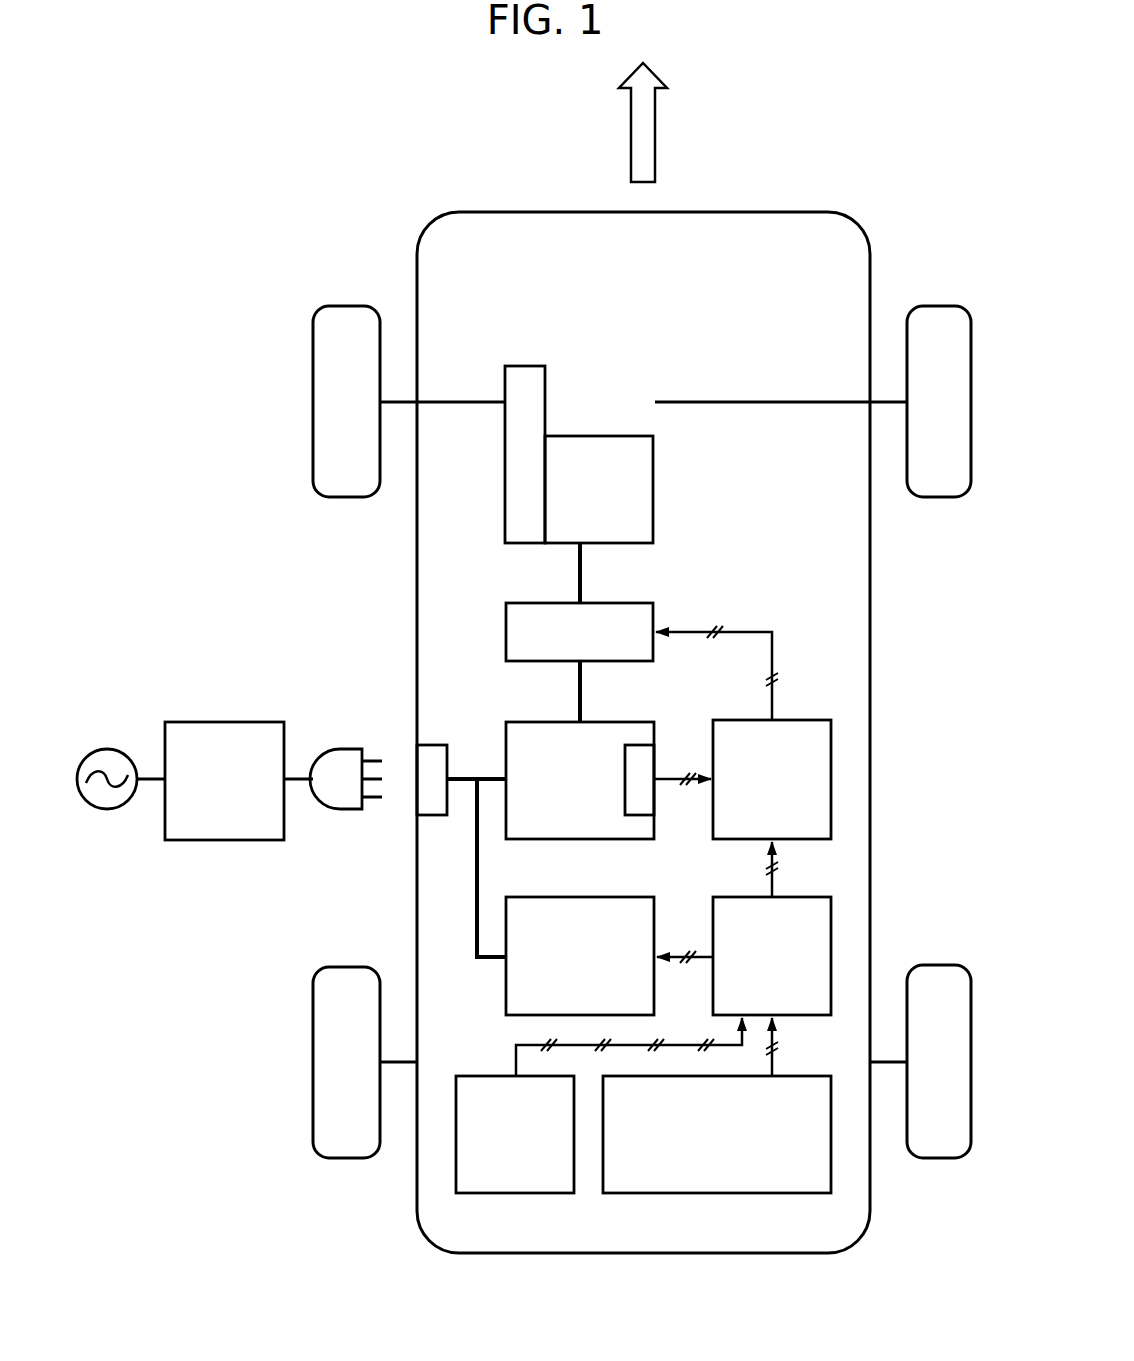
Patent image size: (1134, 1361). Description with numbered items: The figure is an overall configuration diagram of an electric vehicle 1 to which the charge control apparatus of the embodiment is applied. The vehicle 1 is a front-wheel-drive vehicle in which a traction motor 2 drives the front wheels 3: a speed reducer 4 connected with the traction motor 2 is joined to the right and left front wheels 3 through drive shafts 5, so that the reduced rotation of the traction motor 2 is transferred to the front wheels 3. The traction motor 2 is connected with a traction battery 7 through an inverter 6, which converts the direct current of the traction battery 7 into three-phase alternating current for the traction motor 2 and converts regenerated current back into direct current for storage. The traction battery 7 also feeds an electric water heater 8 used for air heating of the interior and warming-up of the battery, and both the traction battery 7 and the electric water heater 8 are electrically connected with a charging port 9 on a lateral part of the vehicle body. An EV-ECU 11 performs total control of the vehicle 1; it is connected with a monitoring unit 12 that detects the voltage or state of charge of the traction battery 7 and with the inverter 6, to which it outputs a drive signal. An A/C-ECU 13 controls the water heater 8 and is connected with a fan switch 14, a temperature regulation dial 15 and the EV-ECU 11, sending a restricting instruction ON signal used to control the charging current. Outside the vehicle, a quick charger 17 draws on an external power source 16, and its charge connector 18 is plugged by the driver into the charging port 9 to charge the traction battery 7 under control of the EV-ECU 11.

The vehicle 1 is at (238, 296).
The traction motor 2 is at (655, 448).
The front wheels 3 is at (347, 305).
The speed reducer 4 is at (520, 365).
The drive shafts 5 is at (464, 400).
The inverter 6 is at (505, 617).
The traction battery 7 is at (526, 720).
The electric water heater 8 is at (526, 896).
The charging port 9 is at (442, 744).
The EV-ECU 11 is at (816, 718).
The monitoring unit 12 is at (635, 744).
The A/C-ECU 13 is at (812, 896).
The fan switch 14 is at (480, 1074).
The temperature regulation dial 15 is at (814, 1074).
The external power source 16 is at (110, 748).
The quick charger 17 is at (192, 720).
The charge connector 18 is at (354, 748).